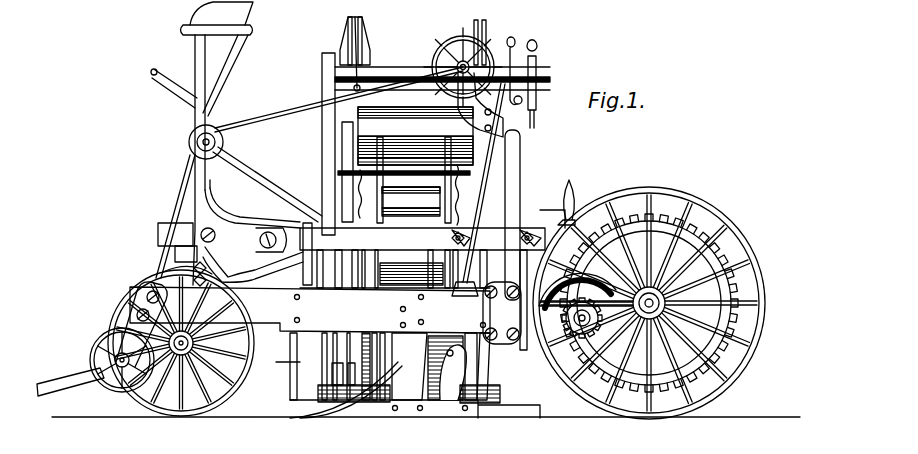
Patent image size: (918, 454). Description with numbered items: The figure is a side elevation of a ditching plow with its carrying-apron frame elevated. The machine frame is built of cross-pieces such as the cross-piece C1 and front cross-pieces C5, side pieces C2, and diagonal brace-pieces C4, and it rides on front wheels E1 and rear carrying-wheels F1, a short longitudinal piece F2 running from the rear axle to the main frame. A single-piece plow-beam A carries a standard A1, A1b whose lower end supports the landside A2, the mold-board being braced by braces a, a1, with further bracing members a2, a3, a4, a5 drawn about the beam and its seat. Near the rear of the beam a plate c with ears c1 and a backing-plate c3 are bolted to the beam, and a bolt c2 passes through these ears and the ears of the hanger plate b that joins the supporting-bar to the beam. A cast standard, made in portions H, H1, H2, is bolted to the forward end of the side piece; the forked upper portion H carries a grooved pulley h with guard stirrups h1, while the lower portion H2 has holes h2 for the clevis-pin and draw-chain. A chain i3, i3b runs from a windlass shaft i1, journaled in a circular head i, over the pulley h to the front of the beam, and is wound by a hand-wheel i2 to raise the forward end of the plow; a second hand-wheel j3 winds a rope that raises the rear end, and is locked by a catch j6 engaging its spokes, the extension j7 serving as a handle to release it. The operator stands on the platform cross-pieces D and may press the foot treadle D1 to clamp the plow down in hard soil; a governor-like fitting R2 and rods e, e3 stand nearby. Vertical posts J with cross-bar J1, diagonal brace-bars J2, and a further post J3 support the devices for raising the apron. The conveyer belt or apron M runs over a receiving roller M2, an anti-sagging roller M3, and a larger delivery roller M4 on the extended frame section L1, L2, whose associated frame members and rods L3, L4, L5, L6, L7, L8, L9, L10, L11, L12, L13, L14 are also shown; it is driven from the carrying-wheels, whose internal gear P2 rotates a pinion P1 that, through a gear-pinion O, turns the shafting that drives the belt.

The carrying-wheels F1 is at (780, 382).
The short longitudinal piece F2 is at (690, 160).
The cross-piece C1 is at (735, 285).
The bolt c2 is at (600, 330).
The ears c1 is at (609, 358).
The gear-pinion O is at (540, 348).
The wheels E1 is at (181, 343).
The conveyer belt or apron M is at (128, 337).
The standard A1 is at (100, 335).
The plow-beam A is at (310, 310).
The landside A2 is at (415, 402).
The standard A1b is at (409, 366).
The roller M2 is at (320, 418).
The side pieces C2 is at (422, 254).
The platform cross-pieces D is at (512, 200).
The rod L3 is at (395, 269).
The backing-plate c3 is at (502, 313).
The hanger plate or casting b is at (505, 288).
The standard upper portion H is at (207, 178).
The brace a is at (217, 18).
The brace a2 is at (225, 75).
The arm a3 is at (174, 87).
The brace a1 is at (182, 51).
The diagonal brace a4 is at (267, 184).
The brace end a5 is at (300, 220).
The stirrups or straps h1 is at (222, 118).
The chain i3 is at (183, 188).
The chain i3b is at (279, 100).
The grooved pulley h is at (185, 142).
The front cross-pieces C5 is at (158, 250).
The standard middle portion H1 is at (250, 220).
The standard lower portion H2 is at (222, 278).
The holes h2 is at (209, 269).
The roller M4 is at (415, 136).
The roller M3 is at (411, 201).
The rod L4 is at (404, 181).
The vertical posts or standards J is at (329, 144).
The cross-bar J1 is at (382, 60).
The extended or delivery frame section L1 is at (304, 156).
The lever L2 is at (306, 178).
The hand-wheel i2 is at (478, 189).
The shaft L5 is at (442, 79).
The hand wheel L8 is at (463, 78).
The lever L7 is at (522, 75).
The extension or handle j7 is at (538, 44).
The hand-wheel j3 is at (552, 62).
The catch j6 is at (552, 84).
The diagonal brace-pieces C4 is at (488, 6).
The rod L6 is at (397, 36).
The rod L9 is at (415, 58).
The rod L10 is at (540, 160).
The rod L11 is at (545, 144).
The rod L12 is at (553, 201).
The governor R2 is at (575, 202).
The foot lever or treadle D1 is at (552, 219).
The internal gear P2 is at (685, 198).
The gear wheel or pinion P1 is at (540, 388).
The rod e is at (288, 352).
The rod e3 is at (309, 348).
The diagonal brace-bars J2 is at (318, 348).
The post J3 is at (314, 368).
The shaft i1 is at (431, 376).
The circular head i is at (293, 388).
The lever L13 is at (292, 374).
The lever L14 is at (514, 388).
The plate c is at (501, 340).